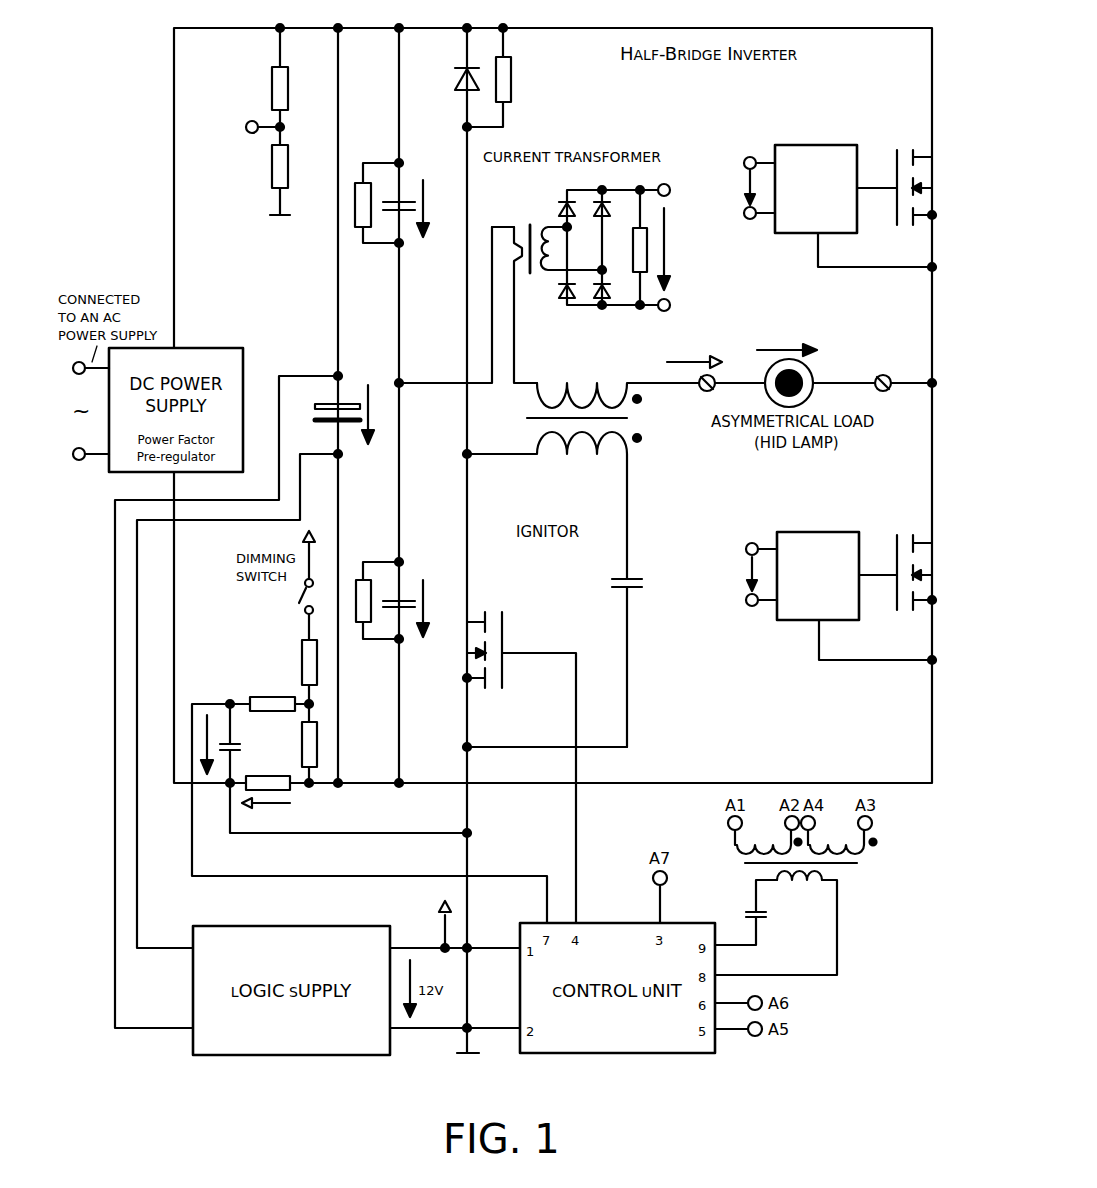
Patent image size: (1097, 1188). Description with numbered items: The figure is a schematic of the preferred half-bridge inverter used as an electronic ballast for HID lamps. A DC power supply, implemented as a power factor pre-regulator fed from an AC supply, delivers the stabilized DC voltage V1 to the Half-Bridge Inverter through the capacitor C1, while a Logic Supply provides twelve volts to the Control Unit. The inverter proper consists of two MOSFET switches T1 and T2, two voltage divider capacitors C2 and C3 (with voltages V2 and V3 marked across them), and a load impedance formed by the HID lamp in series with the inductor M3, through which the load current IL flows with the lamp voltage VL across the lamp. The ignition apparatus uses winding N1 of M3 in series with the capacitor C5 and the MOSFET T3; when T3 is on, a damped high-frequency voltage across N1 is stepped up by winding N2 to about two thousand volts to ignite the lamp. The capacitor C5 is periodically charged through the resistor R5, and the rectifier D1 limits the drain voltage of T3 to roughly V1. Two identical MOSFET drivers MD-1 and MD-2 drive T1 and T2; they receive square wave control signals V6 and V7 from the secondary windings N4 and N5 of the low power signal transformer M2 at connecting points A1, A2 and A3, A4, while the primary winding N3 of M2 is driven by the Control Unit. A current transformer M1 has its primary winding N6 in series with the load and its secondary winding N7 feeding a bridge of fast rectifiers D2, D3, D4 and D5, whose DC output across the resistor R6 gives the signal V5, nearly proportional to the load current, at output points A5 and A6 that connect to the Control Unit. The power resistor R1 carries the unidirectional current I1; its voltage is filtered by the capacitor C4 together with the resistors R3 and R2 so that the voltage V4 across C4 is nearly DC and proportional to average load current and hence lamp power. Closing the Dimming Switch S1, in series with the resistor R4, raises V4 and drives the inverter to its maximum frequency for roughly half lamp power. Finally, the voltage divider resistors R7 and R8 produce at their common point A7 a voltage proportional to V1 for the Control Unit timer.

The power resistor R1 is at (268, 772).
The resistor R2 is at (269, 694).
The resistor R3 is at (296, 752).
The resistor R4 is at (296, 681).
The resistor R5 is at (504, 77).
The resistor R6 is at (627, 247).
The voltage divider resistor R7 is at (293, 180).
The voltage divider resistor R8 is at (294, 86).
The capacitor C1 is at (325, 415).
The voltage divider capacitor C2 is at (385, 600).
The voltage divider capacitor C3 is at (385, 203).
The capacitor C4 is at (238, 743).
The capacitor C5 is at (613, 660).
The rectifier D1 is at (451, 79).
The fast rectifier D2 is at (563, 308).
The fast rectifier D3 is at (601, 308).
The fast rectifier D4 is at (563, 193).
The fast rectifier D5 is at (601, 193).
The MOSFET T1 is at (916, 558).
The MOSFET T2 is at (915, 173).
The MOSFET T3 is at (521, 753).
The current transformer M1 is at (546, 236).
The signal transformer M2 is at (819, 866).
The inductor M3 is at (561, 420).
The winding N1 is at (554, 505).
The winding N2 is at (618, 384).
The primary winding N3 is at (799, 888).
The secondary winding N4 is at (768, 840).
The secondary winding N5 is at (842, 840).
The primary winding N6 is at (502, 216).
The secondary winding N7 is at (568, 261).
The Dimming Switch S1 is at (295, 585).
The MOSFET Driver MD-1 is at (818, 576).
The MOSFET Driver MD-2 is at (816, 189).
The connecting point A1 is at (748, 600).
The connecting point A2 is at (748, 549).
The connecting point A3 is at (746, 213).
The connecting point A4 is at (746, 163).
The output point A5 is at (677, 305).
The output point A6 is at (677, 190).
The common point A7 is at (250, 127).
The DC supply voltage V1 is at (380, 414).
The voltage V2 is at (435, 608).
The voltage V3 is at (435, 208).
The voltage V4 is at (208, 728).
The low voltage signal V5 is at (677, 249).
The square wave AC control signal V6 is at (741, 574).
The square wave control signal V7 is at (739, 187).
The current I1 is at (266, 812).
The load current IL is at (694, 352).
The ignition voltage VL is at (787, 339).